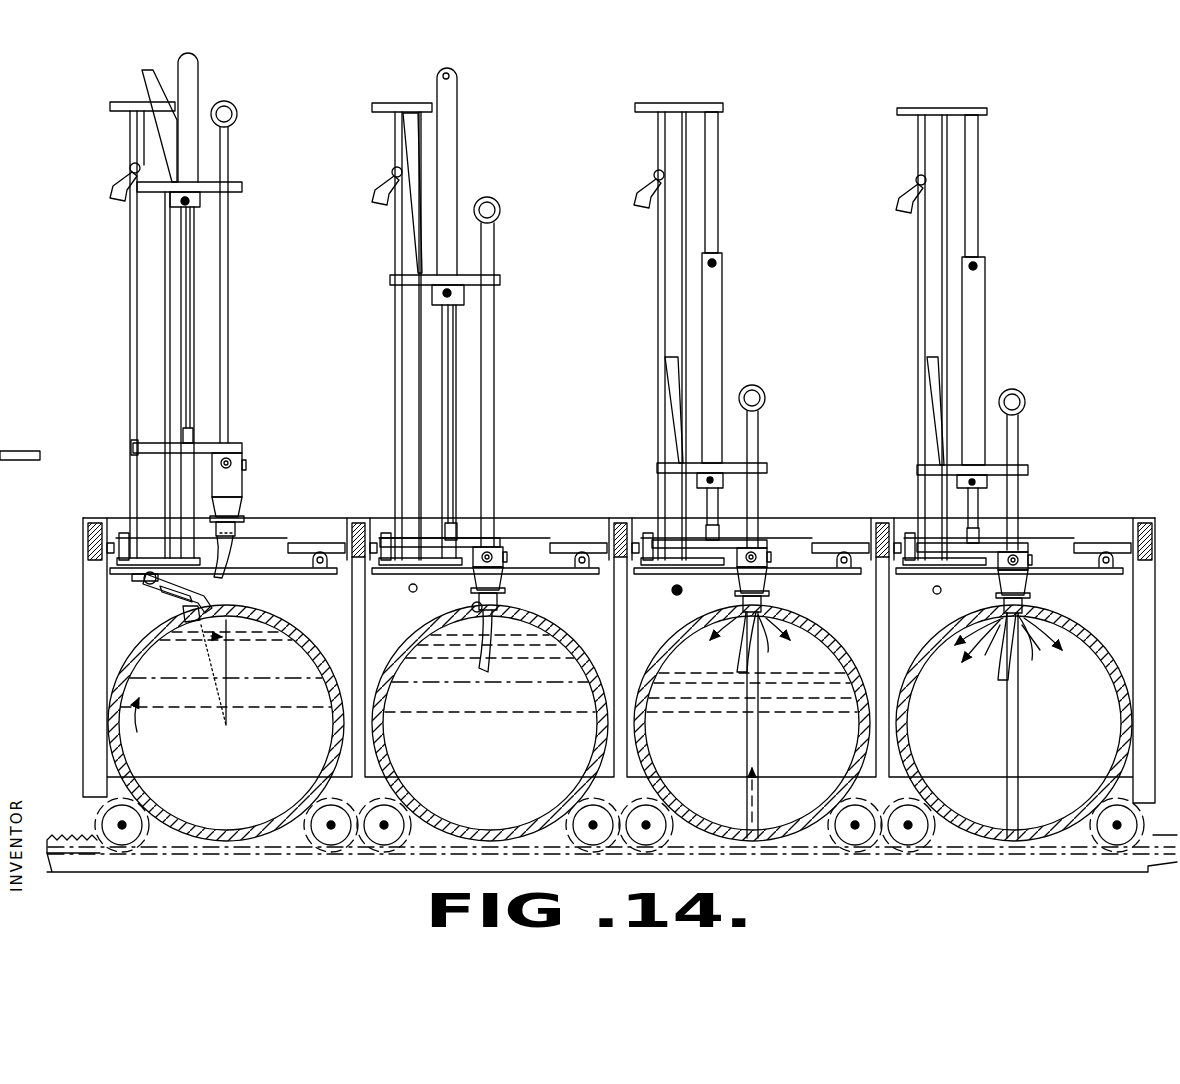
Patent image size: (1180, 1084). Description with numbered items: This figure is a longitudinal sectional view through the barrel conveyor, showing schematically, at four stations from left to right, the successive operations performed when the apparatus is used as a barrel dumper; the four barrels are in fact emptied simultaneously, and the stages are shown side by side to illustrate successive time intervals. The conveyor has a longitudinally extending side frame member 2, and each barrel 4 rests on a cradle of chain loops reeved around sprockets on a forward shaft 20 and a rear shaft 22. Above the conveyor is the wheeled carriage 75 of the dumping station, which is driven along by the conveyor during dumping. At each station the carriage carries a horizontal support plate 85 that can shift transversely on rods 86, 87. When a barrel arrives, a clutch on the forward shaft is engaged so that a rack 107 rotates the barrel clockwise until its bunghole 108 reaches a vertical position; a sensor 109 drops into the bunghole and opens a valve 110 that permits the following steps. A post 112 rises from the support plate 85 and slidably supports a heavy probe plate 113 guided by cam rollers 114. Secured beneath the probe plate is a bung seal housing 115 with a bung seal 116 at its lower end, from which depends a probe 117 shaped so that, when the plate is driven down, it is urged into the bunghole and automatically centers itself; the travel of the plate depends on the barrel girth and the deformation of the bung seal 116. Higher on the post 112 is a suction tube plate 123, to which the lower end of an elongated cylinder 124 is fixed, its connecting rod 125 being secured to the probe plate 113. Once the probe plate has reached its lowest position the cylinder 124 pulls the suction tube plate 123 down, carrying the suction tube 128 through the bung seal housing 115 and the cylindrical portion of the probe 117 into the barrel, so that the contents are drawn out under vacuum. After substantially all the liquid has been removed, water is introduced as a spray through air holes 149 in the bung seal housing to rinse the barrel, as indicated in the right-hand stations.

The side frame member 2 is at (1150, 875).
The barrel 4 is at (192, 838).
The forward shaft 20 is at (122, 830).
The rear shaft 22 is at (330, 830).
The wheeled carriage 75 is at (1063, 518).
The support plate 85 is at (283, 578).
The rod 86 is at (318, 553).
The rod 87 is at (148, 583).
The rack 107 is at (78, 838).
The bunghole 108 is at (178, 616).
The sensor 109 is at (163, 592).
The valve 110 is at (200, 585).
The post 112 is at (133, 315).
The probe plate 113 is at (243, 452).
The cam rollers 114 is at (131, 447).
The bung seal housing 115 is at (242, 480).
The bung seal 116 is at (240, 500).
The probe 117 is at (233, 535).
The suction tube plate 123 is at (243, 188).
The cylinder 124 is at (192, 81).
The connecting rod 125 is at (189, 260).
The suction tube 128 is at (229, 313).
The air holes 149 is at (767, 636).